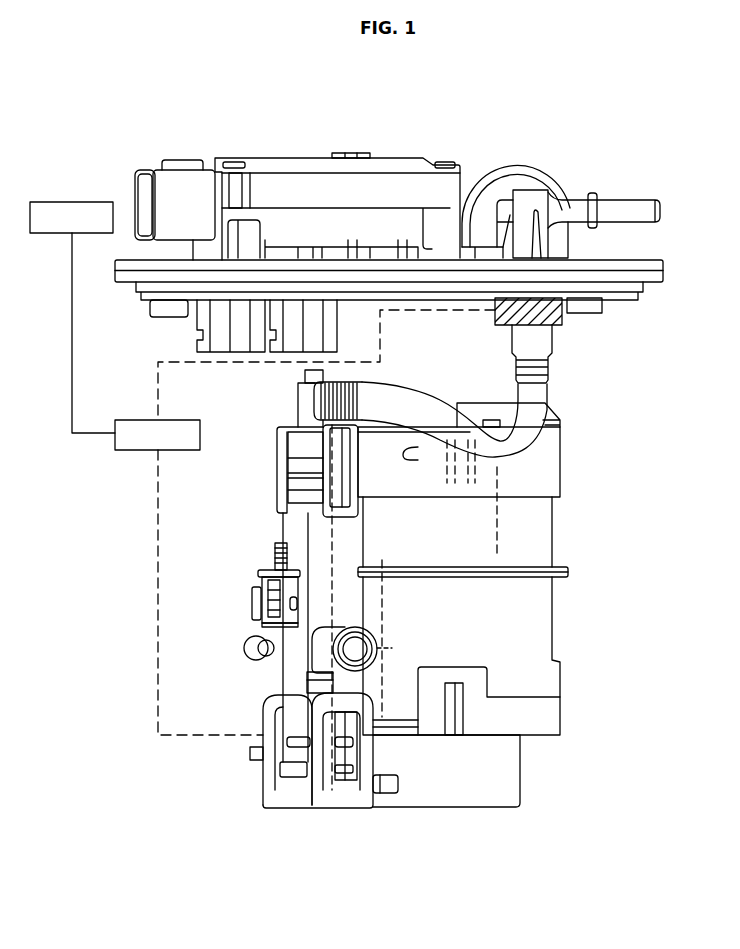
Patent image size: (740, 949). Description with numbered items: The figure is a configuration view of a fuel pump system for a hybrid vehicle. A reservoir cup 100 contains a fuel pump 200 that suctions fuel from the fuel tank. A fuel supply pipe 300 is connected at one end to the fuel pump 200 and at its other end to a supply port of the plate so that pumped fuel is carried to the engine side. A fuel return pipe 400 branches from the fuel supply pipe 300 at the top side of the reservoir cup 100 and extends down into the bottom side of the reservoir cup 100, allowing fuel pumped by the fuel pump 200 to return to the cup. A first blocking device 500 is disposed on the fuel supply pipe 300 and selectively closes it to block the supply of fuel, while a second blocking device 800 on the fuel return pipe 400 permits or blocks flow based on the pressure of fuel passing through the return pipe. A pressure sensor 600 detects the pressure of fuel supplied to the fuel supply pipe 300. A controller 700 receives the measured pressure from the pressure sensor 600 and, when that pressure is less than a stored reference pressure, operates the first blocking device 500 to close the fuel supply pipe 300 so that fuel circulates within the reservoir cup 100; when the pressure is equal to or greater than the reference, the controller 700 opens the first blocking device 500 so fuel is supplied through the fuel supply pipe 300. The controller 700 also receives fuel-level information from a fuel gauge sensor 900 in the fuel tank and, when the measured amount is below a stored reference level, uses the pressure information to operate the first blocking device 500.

The reservoir cup 100 is at (537, 638).
The fuel pump 200 is at (463, 598).
The fuel supply pipe 300 is at (533, 440).
The fuel return pipe 400 is at (303, 558).
The first blocking device 500 is at (558, 325).
The pressure sensor 600 is at (303, 373).
The controller 700 is at (172, 450).
The second blocking device 800 is at (373, 742).
The fuel gauge sensor 900 is at (95, 202).